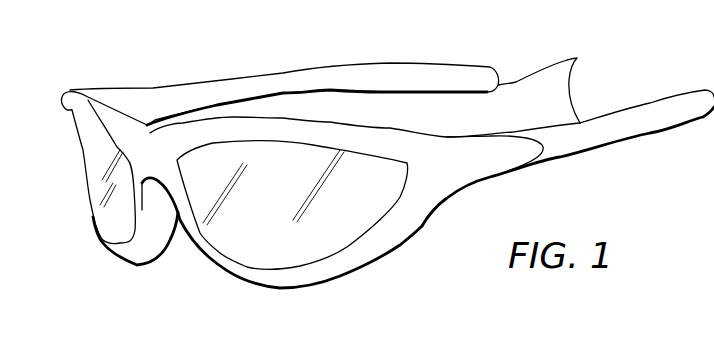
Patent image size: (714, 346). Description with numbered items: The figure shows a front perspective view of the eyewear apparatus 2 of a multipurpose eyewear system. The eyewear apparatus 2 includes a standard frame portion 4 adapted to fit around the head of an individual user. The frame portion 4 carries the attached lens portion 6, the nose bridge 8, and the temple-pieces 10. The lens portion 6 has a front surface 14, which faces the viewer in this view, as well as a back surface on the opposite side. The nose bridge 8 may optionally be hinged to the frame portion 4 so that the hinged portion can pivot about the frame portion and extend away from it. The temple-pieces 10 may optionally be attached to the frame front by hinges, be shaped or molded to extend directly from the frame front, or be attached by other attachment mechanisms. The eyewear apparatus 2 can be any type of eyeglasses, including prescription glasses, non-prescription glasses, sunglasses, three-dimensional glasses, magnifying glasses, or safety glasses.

The eyewear apparatus 2 is at (124, 34).
The frame portion 4 is at (68, 90).
The lens portion 6 is at (88, 160).
The nose bridge 8 is at (150, 143).
The temple-pieces 10 is at (583, 58).
The front surface 14 is at (332, 233).